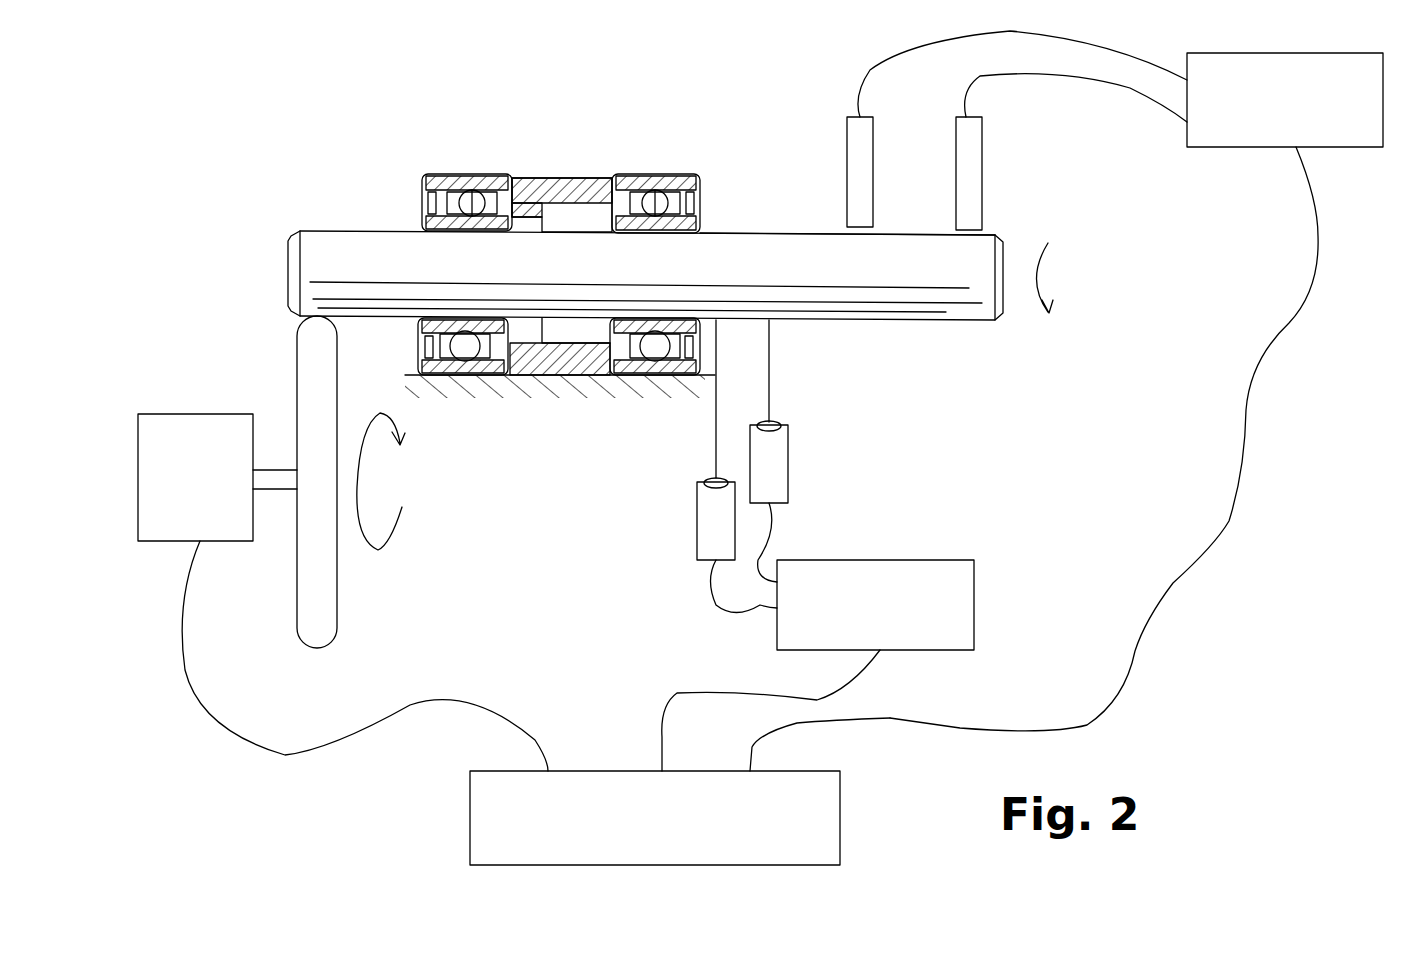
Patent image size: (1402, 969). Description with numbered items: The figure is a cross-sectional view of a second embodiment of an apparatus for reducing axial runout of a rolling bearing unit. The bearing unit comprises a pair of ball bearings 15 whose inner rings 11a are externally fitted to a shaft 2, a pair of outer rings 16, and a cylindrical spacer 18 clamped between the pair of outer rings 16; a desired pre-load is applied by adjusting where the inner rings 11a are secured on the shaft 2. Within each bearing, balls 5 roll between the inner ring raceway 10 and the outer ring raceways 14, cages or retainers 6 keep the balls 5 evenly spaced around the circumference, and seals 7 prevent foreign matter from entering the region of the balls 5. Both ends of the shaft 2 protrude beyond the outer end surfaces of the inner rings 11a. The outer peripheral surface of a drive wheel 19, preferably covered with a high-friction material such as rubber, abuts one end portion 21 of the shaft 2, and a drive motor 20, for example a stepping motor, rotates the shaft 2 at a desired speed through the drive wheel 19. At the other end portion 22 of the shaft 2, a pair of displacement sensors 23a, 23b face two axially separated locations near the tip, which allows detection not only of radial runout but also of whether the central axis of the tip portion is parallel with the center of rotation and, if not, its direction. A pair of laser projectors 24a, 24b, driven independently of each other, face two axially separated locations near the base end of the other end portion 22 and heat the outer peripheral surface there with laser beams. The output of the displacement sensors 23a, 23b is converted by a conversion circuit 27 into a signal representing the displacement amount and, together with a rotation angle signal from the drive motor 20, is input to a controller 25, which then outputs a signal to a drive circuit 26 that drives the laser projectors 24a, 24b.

The shaft 2 is at (592, 175).
The balls 5 is at (462, 175).
The cages or retainers 6 is at (500, 175).
The seals 7 is at (618, 175).
The first inner ring raceway 10 is at (470, 320).
The inner rings 11a is at (503, 377).
The outer ring raceways 14 is at (472, 175).
The ball bearings 15 is at (445, 175).
The outer rings 16 is at (442, 377).
The cylindrical spacer 18 is at (555, 178).
The drive wheel 19 is at (305, 355).
The drive motor 20 is at (197, 428).
The one end portion 21 is at (330, 250).
The other end portion 22 is at (800, 250).
The displacement sensor 23a is at (863, 185).
The displacement sensor 23b is at (972, 188).
The laser projector 24a is at (707, 520).
The laser projector 24b is at (780, 478).
The controller 25 is at (828, 802).
The drive circuit 26 is at (977, 595).
The conversion circuit 27 is at (1356, 135).